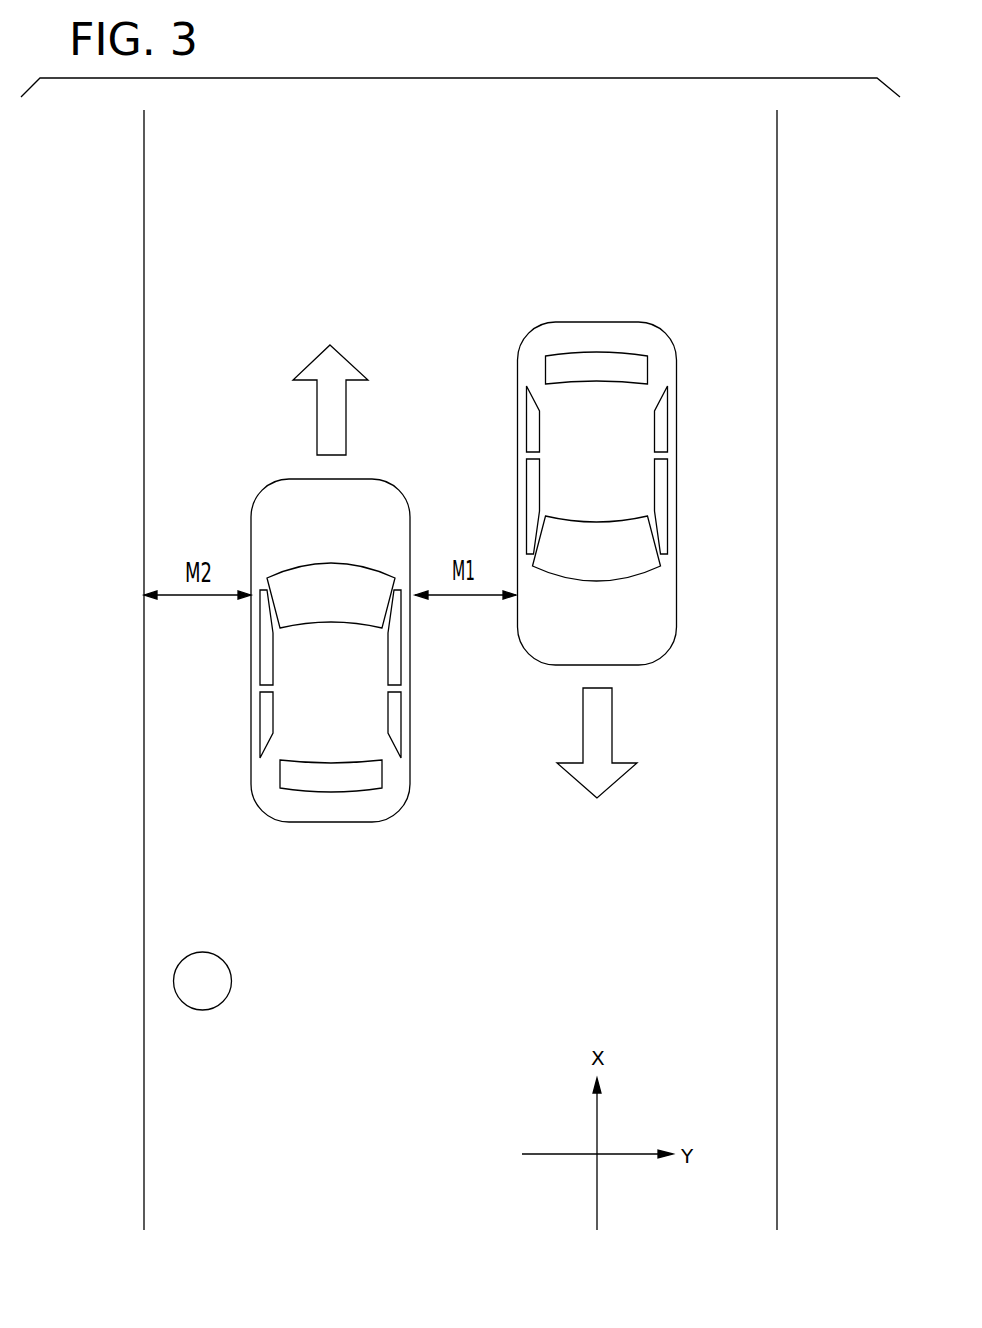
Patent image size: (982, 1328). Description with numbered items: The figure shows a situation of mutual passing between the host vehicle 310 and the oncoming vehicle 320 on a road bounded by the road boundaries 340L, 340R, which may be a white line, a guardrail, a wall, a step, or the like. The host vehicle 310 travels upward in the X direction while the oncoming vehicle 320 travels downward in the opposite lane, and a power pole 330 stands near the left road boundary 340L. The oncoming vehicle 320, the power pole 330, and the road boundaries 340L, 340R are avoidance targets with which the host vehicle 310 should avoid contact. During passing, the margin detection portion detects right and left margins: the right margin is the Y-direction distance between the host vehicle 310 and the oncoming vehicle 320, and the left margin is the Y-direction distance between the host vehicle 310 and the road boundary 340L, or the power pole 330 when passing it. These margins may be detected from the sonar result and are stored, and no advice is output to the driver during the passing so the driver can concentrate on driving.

The host vehicle 310 is at (330, 823).
The oncoming vehicle 320 is at (595, 321).
The power pole 330 is at (203, 1011).
The road boundary 340L is at (144, 196).
The road boundary 340R is at (777, 196).